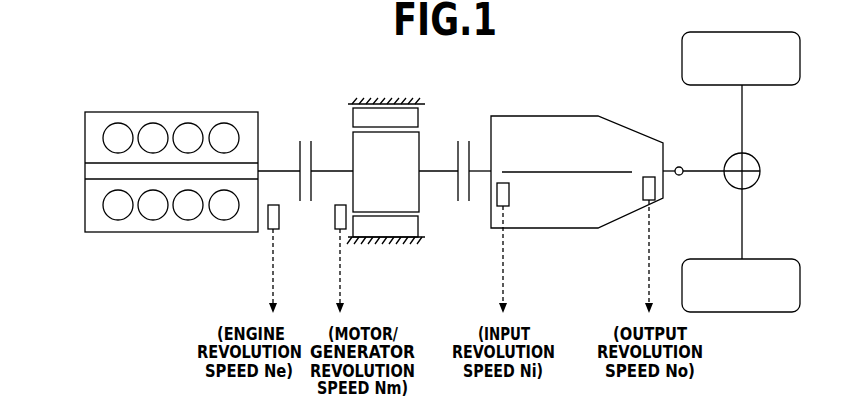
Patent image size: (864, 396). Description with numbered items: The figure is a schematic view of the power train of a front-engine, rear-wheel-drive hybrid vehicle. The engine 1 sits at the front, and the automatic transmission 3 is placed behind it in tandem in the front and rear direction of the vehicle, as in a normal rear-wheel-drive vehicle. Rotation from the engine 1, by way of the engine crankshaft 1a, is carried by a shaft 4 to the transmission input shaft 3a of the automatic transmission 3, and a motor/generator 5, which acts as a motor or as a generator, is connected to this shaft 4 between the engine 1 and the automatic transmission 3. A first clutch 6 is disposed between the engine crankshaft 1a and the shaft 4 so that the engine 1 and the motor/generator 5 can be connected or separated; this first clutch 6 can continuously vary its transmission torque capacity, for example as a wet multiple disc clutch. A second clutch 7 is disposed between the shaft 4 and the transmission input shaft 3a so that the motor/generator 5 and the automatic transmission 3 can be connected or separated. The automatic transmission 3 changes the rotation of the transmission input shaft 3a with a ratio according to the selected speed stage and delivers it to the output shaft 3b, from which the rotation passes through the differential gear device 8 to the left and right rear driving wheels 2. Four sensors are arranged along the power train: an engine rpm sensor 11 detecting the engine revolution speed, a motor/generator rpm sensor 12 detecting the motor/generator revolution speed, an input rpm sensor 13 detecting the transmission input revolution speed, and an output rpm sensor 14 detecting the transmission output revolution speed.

The engine 1 is at (143, 106).
The engine crankshaft 1a is at (275, 170).
The rear driving wheels 2 is at (682, 60).
The automatic transmission 3 is at (558, 107).
The transmission input shaft 3a is at (482, 170).
The output shaft 3b is at (670, 168).
The shaft 4 is at (433, 168).
The motor/generator 5 is at (372, 94).
The first clutch 6 is at (303, 136).
The second clutch 7 is at (462, 208).
The differential gear device 8 is at (761, 172).
The engine rpm sensor 11 is at (268, 231).
The motor/generator rpm sensor 12 is at (335, 231).
The input rpm sensor 13 is at (509, 192).
The output rpm sensor 14 is at (643, 198).